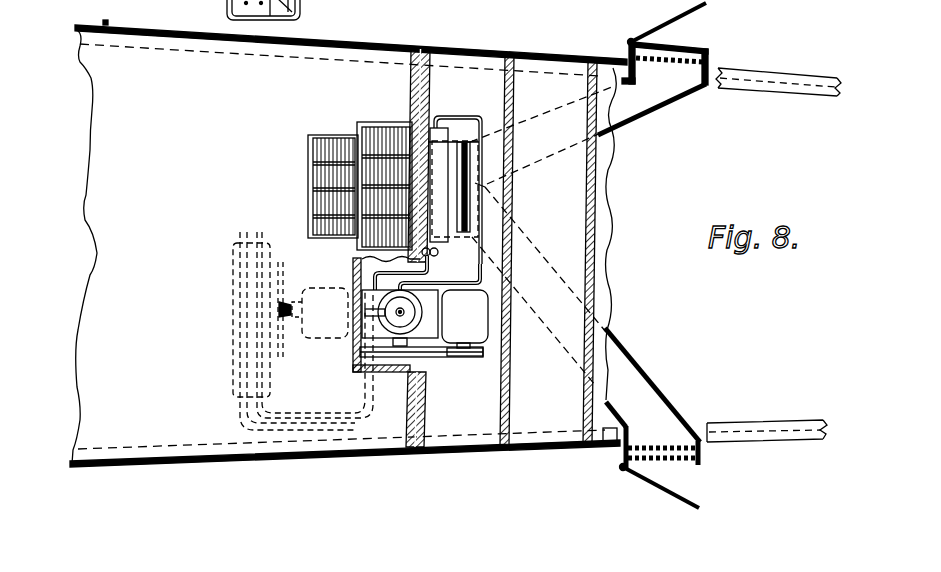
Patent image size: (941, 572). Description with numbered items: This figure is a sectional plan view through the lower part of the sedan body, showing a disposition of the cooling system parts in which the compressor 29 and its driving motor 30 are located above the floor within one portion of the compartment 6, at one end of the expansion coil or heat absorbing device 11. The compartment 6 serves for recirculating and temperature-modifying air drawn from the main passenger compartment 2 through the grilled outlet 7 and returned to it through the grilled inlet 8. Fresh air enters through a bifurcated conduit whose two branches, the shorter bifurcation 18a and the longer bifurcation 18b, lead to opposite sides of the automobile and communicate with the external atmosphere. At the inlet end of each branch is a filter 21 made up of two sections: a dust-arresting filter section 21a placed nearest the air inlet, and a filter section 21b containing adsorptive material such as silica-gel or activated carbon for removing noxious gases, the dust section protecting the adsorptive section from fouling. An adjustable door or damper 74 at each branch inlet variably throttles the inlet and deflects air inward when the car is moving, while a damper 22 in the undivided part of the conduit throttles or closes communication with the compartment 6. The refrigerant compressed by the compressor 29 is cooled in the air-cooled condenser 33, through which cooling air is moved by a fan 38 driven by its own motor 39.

The main passenger compartment 2 is at (348, 233).
The compartment 6 is at (455, 175).
The outlet 7 is at (310, 152).
The inlet 8 is at (379, 129).
The expansion coil or heat absorbing device 11 is at (437, 245).
The bifurcation of the conduit 18a is at (636, 104).
The bifurcation of the conduit 18b is at (626, 388).
The filter 21 is at (704, 46).
The filter section 21a is at (671, 44).
The filter section 21b is at (698, 60).
The damper 22 is at (478, 140).
The compressor 29 is at (431, 358).
The motor 30 is at (465, 323).
The condenser 33 is at (235, 300).
The fan 38 is at (284, 277).
The motor 39 is at (322, 327).
The adjustable door or damper 74 is at (664, 26).